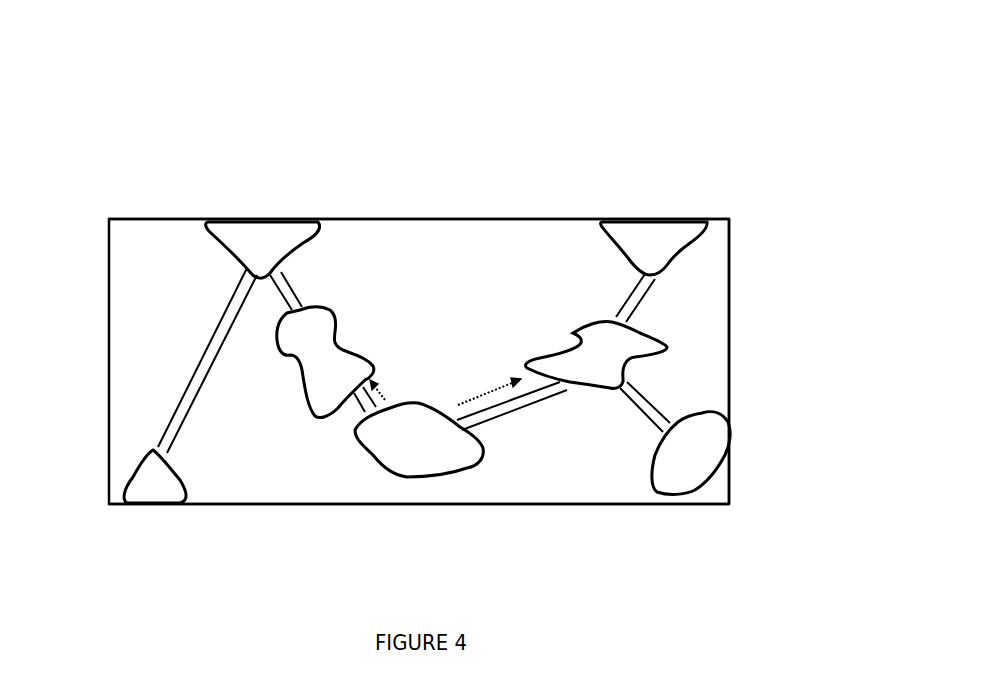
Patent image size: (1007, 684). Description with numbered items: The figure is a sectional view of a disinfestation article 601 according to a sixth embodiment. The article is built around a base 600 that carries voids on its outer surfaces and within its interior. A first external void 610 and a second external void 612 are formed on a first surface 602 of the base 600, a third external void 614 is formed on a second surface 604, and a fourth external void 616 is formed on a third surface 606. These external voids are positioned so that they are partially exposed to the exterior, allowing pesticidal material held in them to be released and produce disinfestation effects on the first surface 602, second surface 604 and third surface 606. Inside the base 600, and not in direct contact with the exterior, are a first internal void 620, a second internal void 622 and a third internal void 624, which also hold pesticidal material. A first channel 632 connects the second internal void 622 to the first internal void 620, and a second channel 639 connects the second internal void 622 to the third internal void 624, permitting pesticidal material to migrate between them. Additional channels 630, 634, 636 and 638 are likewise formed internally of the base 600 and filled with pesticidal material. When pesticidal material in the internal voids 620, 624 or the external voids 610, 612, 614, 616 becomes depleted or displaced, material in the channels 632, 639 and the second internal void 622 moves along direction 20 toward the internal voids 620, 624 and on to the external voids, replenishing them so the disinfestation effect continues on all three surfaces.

The disinfestation article 601 is at (188, 94).
The base 600 is at (167, 230).
The first surface 602 is at (452, 218).
The second surface 604 is at (215, 503).
The third surface 606 is at (730, 380).
The first external void 610 is at (278, 230).
The second external void 612 is at (672, 247).
The third external void 614 is at (145, 493).
The fourth external void 616 is at (695, 445).
The first internal void 620 is at (300, 367).
The second internal void 622 is at (430, 470).
The third internal void 624 is at (580, 380).
The channel 630 is at (288, 288).
The first channel 632 is at (340, 420).
The channel 634 is at (173, 410).
The channel 636 is at (643, 297).
The channel 638 is at (643, 413).
The second channel 639 is at (498, 400).
The direction 20 is at (388, 397).